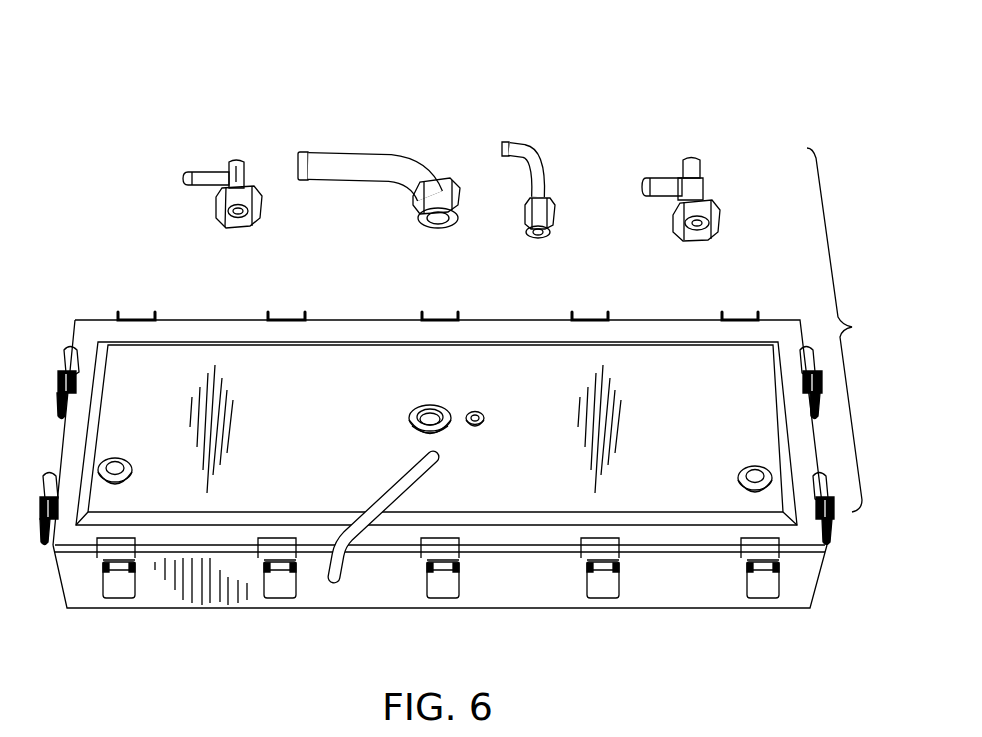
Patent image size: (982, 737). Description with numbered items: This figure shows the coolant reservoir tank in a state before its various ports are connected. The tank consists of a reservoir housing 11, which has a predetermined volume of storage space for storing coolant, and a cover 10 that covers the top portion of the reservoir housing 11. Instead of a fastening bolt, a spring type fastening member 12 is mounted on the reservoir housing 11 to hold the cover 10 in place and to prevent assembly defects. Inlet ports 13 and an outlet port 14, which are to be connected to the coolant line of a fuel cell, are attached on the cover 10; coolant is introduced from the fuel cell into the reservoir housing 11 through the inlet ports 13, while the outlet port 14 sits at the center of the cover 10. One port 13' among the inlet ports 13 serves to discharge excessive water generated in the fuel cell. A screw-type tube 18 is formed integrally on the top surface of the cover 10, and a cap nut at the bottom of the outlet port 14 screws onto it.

The cover 10 is at (182, 352).
The reservoir housing 11 is at (165, 597).
The spring type fastening member 12 is at (115, 591).
The inlet port 13 is at (528, 176).
The port for discharging excessive water 13' is at (383, 549).
The outlet port 14 is at (388, 165).
The screw-type tube 18 is at (428, 406).